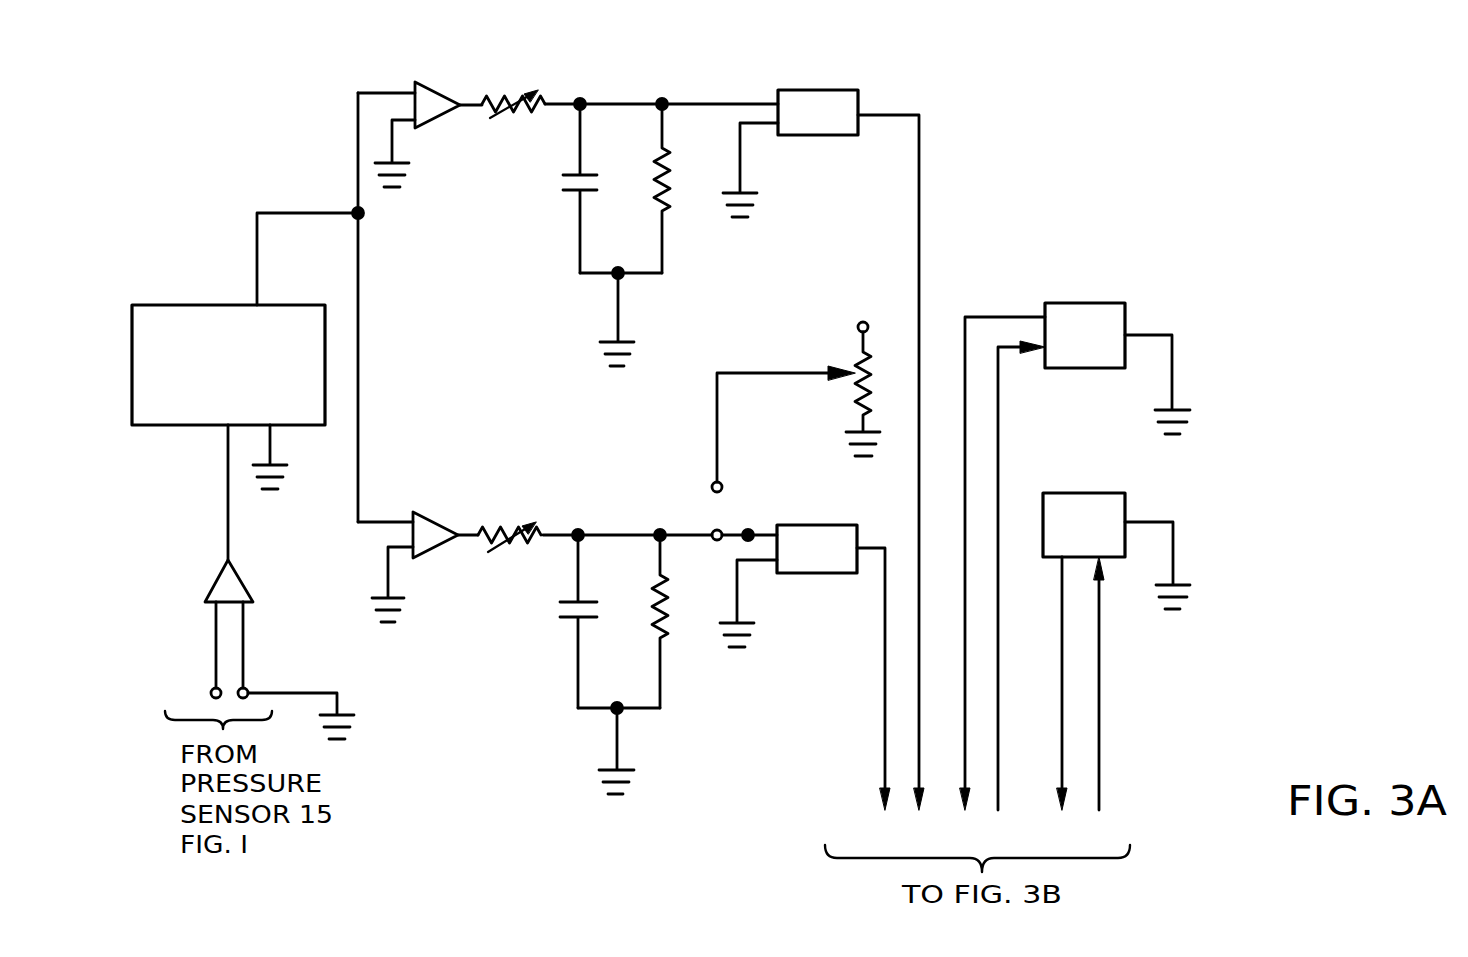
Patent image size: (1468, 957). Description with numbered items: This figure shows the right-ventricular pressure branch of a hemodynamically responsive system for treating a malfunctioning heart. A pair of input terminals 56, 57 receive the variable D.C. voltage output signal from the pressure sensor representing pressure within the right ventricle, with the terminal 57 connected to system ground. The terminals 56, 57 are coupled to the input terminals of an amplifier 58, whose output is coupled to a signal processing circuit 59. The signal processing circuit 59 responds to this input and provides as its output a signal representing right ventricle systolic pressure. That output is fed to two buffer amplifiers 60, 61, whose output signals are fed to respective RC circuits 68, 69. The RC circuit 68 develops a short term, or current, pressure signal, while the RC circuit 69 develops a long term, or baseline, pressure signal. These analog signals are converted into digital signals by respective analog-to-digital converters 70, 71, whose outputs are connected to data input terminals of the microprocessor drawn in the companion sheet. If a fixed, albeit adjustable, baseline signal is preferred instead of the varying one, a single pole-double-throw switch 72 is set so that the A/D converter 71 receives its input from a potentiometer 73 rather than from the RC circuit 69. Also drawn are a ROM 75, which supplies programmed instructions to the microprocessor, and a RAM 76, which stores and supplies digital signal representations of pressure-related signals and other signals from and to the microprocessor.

The input terminal 56 is at (210, 690).
The input terminal 57 is at (249, 690).
The amplifier 58 is at (242, 572).
The signal processing circuit 59 is at (213, 305).
The buffer amplifier 60 is at (437, 93).
The buffer amplifier 61 is at (437, 520).
The RC circuit 68 is at (475, 92).
The RC circuit 69 is at (472, 516).
The analog-to-digital converter 70 is at (815, 90).
The analog-to-digital converter 71 is at (817, 525).
The single pole-double-throw switch 72 is at (722, 541).
The potentiometer 73 is at (853, 400).
The ROM 75 is at (1075, 493).
The RAM 76 is at (1085, 303).